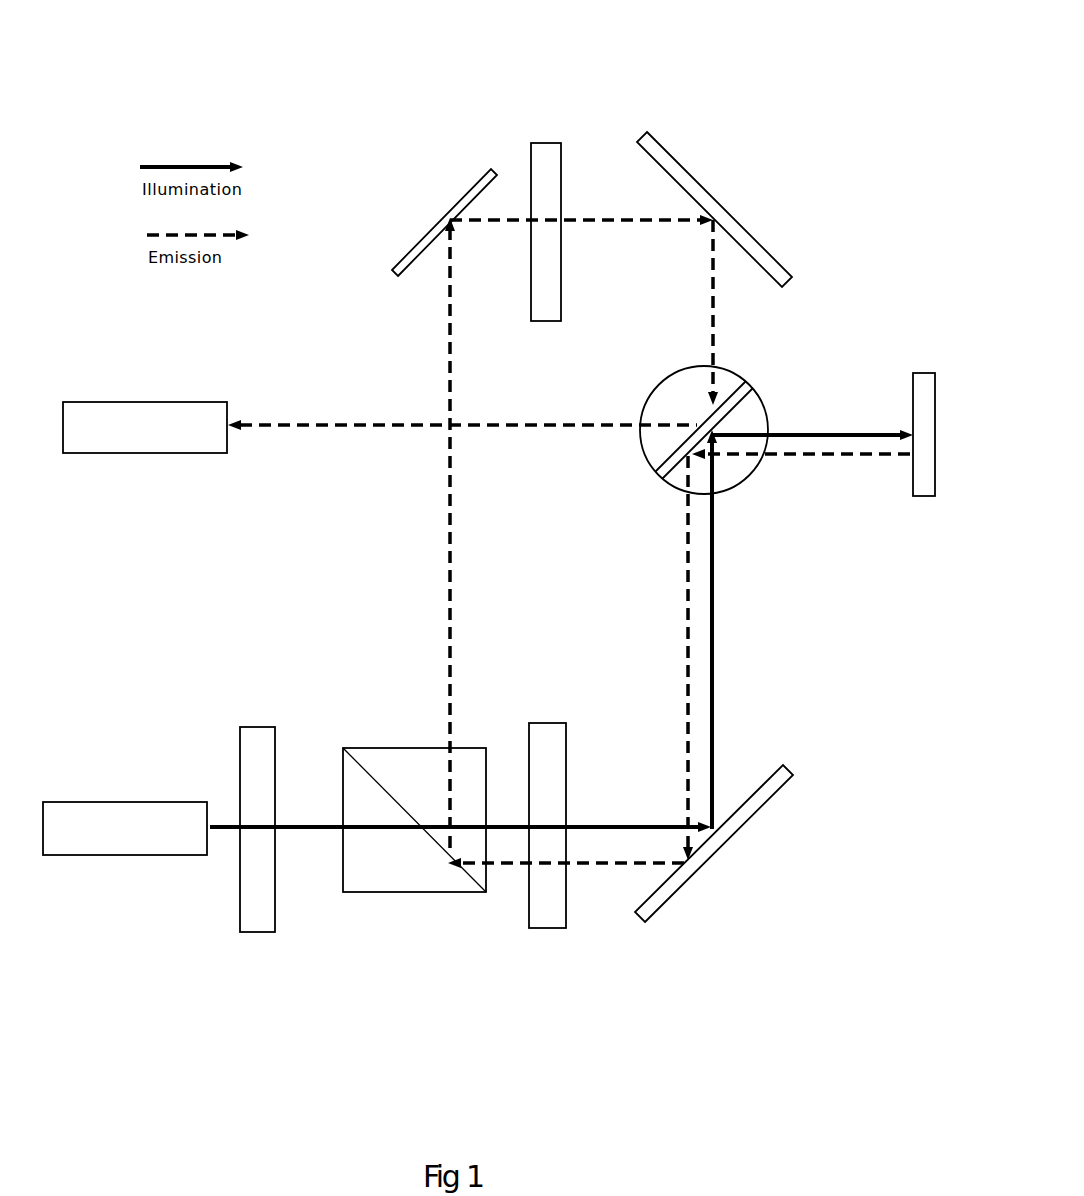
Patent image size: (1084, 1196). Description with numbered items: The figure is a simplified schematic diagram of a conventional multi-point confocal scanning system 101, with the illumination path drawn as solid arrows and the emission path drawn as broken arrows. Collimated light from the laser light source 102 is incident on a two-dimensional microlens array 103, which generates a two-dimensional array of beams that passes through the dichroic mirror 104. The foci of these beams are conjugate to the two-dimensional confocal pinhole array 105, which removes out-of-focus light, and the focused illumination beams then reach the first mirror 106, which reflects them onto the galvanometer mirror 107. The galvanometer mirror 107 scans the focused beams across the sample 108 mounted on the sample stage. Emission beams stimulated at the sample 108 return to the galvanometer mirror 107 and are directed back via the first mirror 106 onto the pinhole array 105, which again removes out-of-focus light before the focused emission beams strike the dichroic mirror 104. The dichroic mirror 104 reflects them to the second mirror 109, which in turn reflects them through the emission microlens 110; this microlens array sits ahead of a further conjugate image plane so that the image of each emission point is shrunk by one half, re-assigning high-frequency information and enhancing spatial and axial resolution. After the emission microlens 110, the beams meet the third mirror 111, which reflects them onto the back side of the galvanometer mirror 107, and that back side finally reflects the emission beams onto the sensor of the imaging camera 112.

The confocal scanning system 101 is at (168, 57).
The laser light source 102 is at (125, 765).
The microlens array 103 is at (259, 795).
The dichroic mirror 104 is at (404, 795).
The pinhole array 105 is at (545, 789).
The first mirror 106 is at (714, 873).
The galvanometer mirror 107 is at (706, 470).
The sample 108 is at (896, 411).
The second mirror 109 is at (436, 187).
The emission microlens 110 is at (545, 267).
The third mirror 111 is at (752, 209).
The imaging camera 112 is at (145, 375).